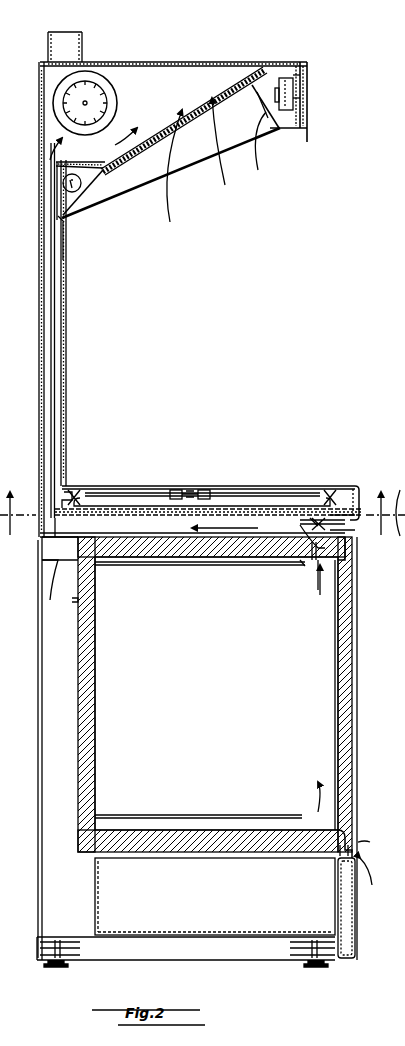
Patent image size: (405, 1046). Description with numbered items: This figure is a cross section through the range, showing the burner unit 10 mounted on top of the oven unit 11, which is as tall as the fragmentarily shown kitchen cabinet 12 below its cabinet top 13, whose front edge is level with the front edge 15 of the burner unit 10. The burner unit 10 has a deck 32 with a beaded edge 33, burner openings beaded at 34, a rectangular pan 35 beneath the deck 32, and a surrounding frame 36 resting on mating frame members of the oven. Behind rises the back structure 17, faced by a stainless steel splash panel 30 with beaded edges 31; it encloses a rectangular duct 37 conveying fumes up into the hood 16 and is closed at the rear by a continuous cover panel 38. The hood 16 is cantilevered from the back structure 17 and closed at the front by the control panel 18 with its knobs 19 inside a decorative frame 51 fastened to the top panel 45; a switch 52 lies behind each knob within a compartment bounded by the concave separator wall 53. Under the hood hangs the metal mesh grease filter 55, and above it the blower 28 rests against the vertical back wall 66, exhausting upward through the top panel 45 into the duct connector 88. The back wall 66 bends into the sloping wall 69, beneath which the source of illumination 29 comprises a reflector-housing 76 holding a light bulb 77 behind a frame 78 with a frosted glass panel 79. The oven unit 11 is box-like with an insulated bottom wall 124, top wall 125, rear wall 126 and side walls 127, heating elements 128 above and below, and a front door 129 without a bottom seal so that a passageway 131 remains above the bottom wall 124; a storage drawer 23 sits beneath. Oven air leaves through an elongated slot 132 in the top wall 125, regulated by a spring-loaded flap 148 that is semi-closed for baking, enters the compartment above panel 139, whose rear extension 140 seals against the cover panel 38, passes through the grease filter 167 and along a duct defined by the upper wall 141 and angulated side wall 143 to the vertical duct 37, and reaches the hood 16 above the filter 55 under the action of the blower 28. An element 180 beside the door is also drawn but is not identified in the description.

The burner unit 10 is at (270, 470).
The oven unit 11 is at (195, 684).
The kitchen cabinet 12 is at (404, 426).
The cabinet top 13 is at (404, 453).
The front edge of burner unit 15 is at (358, 492).
The hood 16 is at (197, 74).
The back structure 17 is at (70, 343).
The control panel 18 is at (304, 78).
The control knobs 19 is at (304, 97).
The storage drawer 23 is at (215, 896).
The blower 28 is at (102, 80).
The source of illumination 29 is at (88, 200).
The splash panel 30 is at (66, 300).
The beaded edges 31 is at (66, 318).
The deck 32 is at (192, 488).
The beaded edge 33 is at (80, 490).
The beaded opening edges 34 is at (136, 490).
The rectangular pan 35 is at (236, 505).
The frame 36 is at (98, 492).
The duct 37 is at (50, 194).
The cover panel 38 is at (40, 422).
The top panel 45 is at (163, 64).
The decorative frame 51 is at (297, 113).
The switch 52 is at (285, 78).
The separator wall 53 is at (264, 110).
The grease filter 55 is at (152, 135).
The vertical wall 66 is at (46, 120).
The sloping wall 69 is at (80, 165).
The reflector-housing 76 is at (58, 206).
The light bulb 77 is at (88, 188).
The frame 78 is at (98, 178).
The frosted glass panel 79 is at (82, 218).
The duct connector 88 is at (64, 42).
The bottom wall 124 is at (200, 830).
The top wall 125 is at (246, 567).
The rear wall 126 is at (96, 684).
The side walls 127 is at (248, 715).
The electrical heating elements 128 is at (300, 568).
The front door 129 is at (354, 698).
The passageway 131 is at (350, 840).
The elongated slot 132 is at (342, 560).
The panel 139 is at (168, 540).
The extension 140 is at (60, 568).
The upper wall of duct 141 is at (136, 518).
The angulated side wall 143 is at (196, 532).
The flap 148 is at (312, 568).
The filter 167 is at (288, 520).
The door inner panel 180 is at (334, 730).